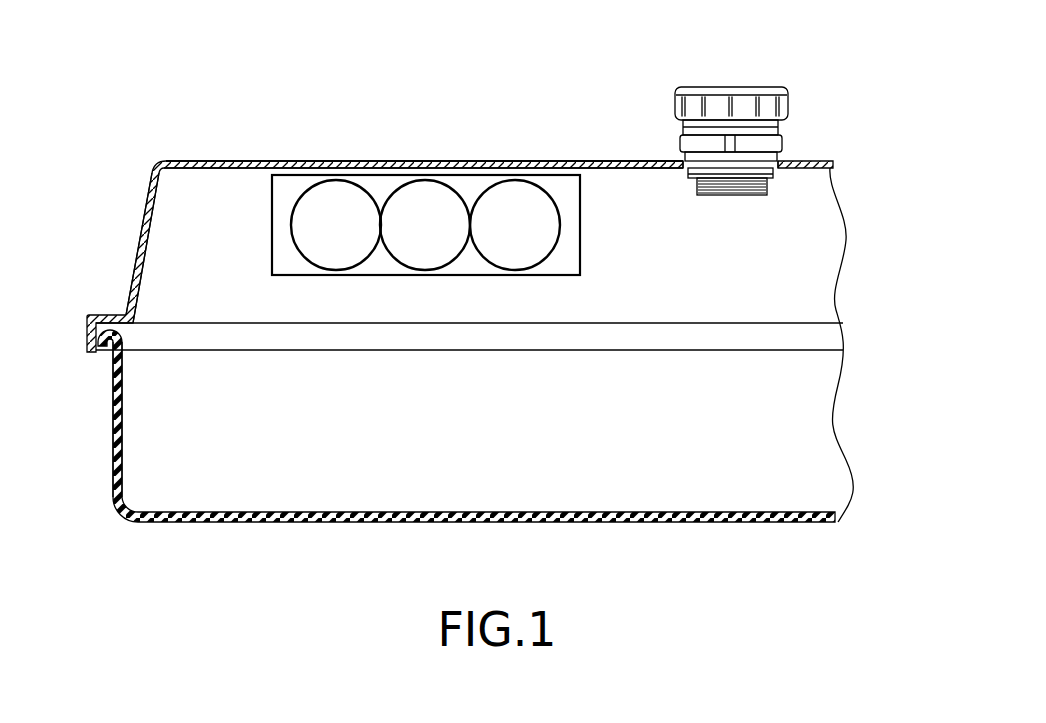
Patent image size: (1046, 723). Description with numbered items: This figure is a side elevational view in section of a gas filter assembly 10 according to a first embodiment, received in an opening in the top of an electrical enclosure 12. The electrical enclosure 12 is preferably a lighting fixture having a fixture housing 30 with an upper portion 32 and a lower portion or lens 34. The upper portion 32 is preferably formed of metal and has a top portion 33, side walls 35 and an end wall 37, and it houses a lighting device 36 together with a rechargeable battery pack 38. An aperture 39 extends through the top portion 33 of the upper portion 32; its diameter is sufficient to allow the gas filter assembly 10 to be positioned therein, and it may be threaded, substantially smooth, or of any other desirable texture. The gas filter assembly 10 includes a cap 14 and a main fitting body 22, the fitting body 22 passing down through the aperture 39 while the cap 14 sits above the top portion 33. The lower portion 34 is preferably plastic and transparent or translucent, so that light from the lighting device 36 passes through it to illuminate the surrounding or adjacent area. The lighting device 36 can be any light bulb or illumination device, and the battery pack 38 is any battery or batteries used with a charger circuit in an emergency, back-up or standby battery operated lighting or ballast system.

The gas filter assembly 10 is at (806, 75).
The electrical enclosure 12 is at (146, 178).
The cap 14 is at (677, 88).
The main fitting body 22 is at (694, 191).
The fixture housing 30 is at (367, 150).
The upper portion 32 is at (272, 161).
The top portion 33 is at (495, 161).
The lower portion or lens 34 is at (113, 425).
The side walls 35 is at (812, 228).
The lighting device 36 is at (541, 210).
The end wall 37 is at (133, 293).
The rechargeable battery pack 38 is at (270, 207).
The aperture 39 is at (778, 163).